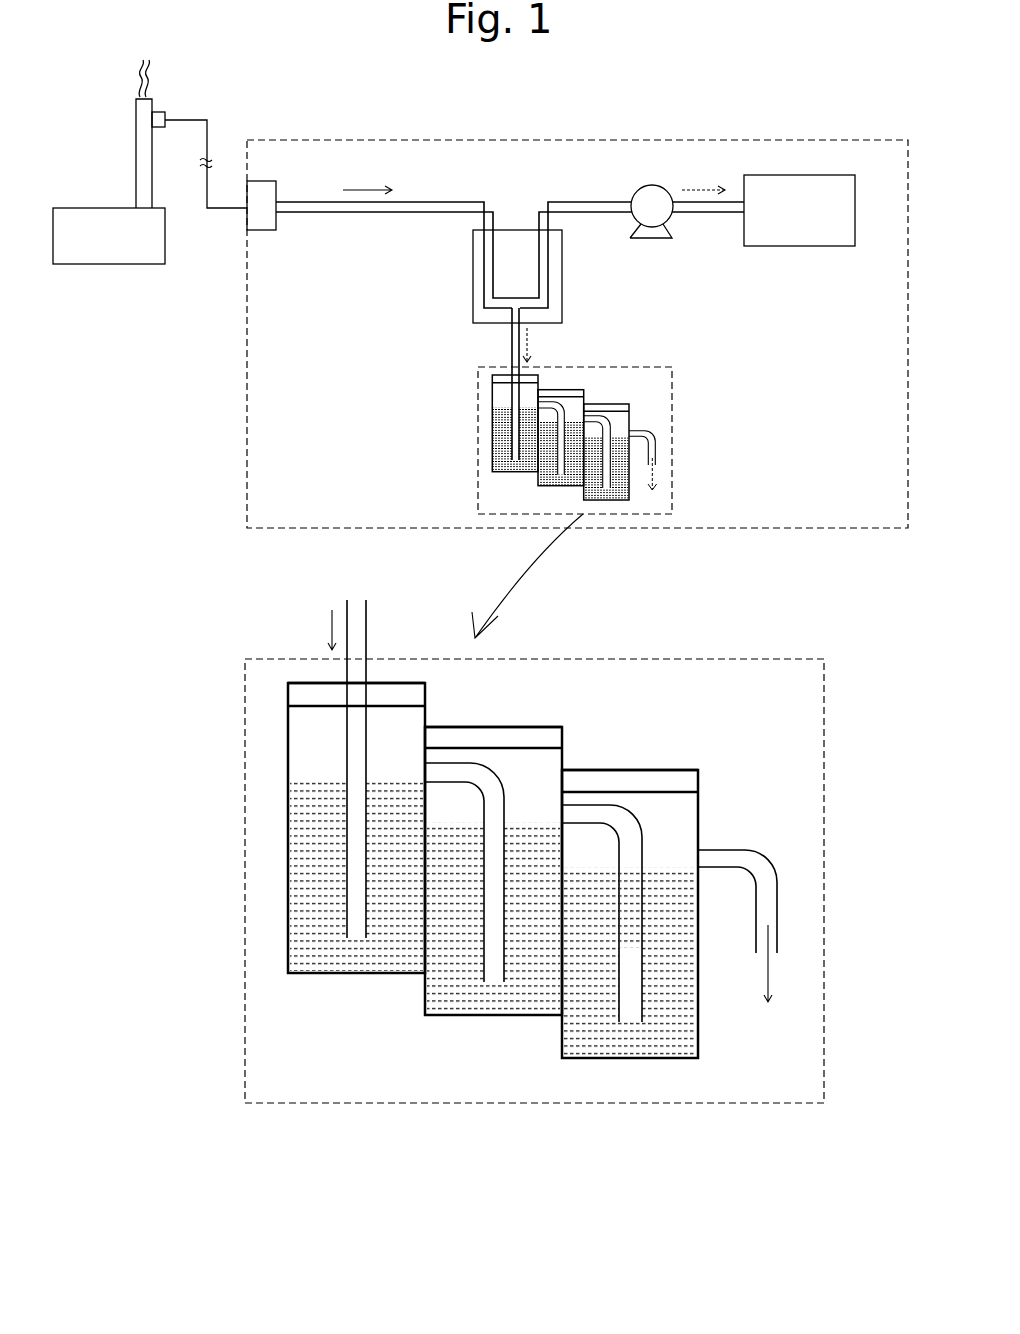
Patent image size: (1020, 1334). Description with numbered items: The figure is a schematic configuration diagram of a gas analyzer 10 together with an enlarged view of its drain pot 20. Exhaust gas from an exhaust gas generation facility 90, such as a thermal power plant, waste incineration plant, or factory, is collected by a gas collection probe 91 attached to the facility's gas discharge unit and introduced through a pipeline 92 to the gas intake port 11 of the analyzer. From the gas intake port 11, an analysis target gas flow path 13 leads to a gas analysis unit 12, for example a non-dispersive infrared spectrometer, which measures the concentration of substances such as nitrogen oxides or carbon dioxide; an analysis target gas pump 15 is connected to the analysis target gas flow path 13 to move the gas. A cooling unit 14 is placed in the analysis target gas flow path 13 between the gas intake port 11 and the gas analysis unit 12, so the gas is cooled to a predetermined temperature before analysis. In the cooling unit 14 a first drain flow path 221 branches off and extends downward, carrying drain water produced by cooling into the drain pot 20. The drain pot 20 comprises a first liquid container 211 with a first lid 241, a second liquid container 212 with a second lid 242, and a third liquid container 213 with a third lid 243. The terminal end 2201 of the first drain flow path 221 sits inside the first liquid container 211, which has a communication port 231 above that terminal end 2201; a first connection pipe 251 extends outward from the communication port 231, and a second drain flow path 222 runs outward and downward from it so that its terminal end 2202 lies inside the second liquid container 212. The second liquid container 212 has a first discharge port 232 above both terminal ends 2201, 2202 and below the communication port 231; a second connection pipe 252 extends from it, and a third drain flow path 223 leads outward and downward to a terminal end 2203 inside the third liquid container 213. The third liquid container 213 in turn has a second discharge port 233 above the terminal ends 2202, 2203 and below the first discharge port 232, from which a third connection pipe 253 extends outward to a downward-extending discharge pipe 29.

The gas analyzer 10 is at (907, 528).
The gas intake port 11 is at (260, 180).
The gas analysis unit 12 is at (855, 247).
The analysis target gas flow path 13 is at (437, 202).
The cooling unit 14 is at (562, 312).
The analysis target gas pump 15 is at (662, 230).
The drain pot 20 is at (670, 514).
The discharge pipe 29 is at (763, 909).
The exhaust gas generation facility 90 is at (108, 265).
The gas collection probe 91 is at (155, 113).
The pipeline 92 is at (234, 211).
The first liquid container 211 is at (327, 813).
The second liquid container 212 is at (462, 932).
The third liquid container 213 is at (668, 973).
The first drain flow path 221 is at (357, 763).
The second drain flow path 222 is at (495, 893).
The third drain flow path 223 is at (632, 913).
The communication port 231 is at (427, 768).
The first discharge port 232 is at (562, 817).
The second discharge port 233 is at (698, 860).
The first lid 241 is at (312, 694).
The second lid 242 is at (507, 738).
The third lid 243 is at (607, 783).
The first connection pipe 251 is at (447, 762).
The second connection pipe 252 is at (585, 812).
The third connection pipe 253 is at (720, 868).
The terminal end of the first drain flow path 2201 is at (357, 937).
The terminal end of the second drain flow path 2202 is at (490, 982).
The terminal end of the third drain flow path 2203 is at (633, 1025).